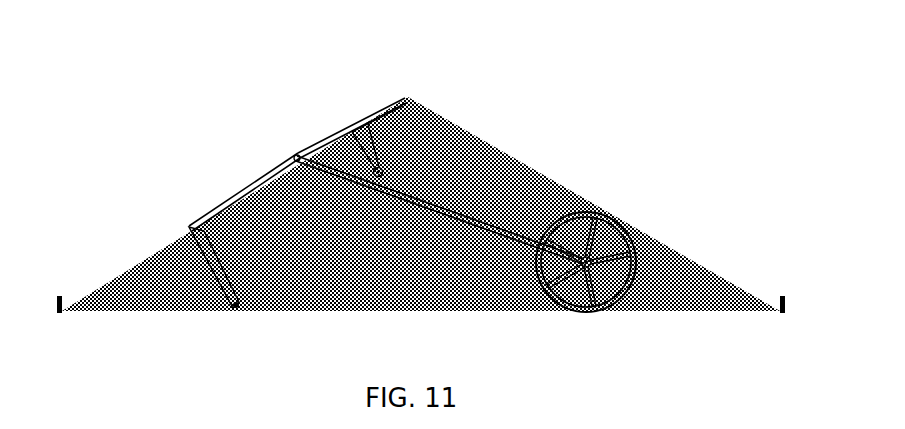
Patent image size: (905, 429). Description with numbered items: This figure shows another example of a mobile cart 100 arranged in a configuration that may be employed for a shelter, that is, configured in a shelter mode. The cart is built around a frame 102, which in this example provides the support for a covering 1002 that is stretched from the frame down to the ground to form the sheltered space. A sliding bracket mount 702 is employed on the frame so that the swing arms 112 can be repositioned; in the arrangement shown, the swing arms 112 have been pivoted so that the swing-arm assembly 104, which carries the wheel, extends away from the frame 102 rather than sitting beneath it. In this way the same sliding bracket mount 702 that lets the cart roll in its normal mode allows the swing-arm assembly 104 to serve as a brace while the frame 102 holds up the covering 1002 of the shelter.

The mobile cart 100 is at (251, 122).
The frame 102 is at (237, 196).
The swing-arm assembly 104 is at (530, 197).
The swing arms 112 is at (442, 206).
The sliding bracket mount 702 is at (378, 178).
The covering 1002 is at (145, 252).